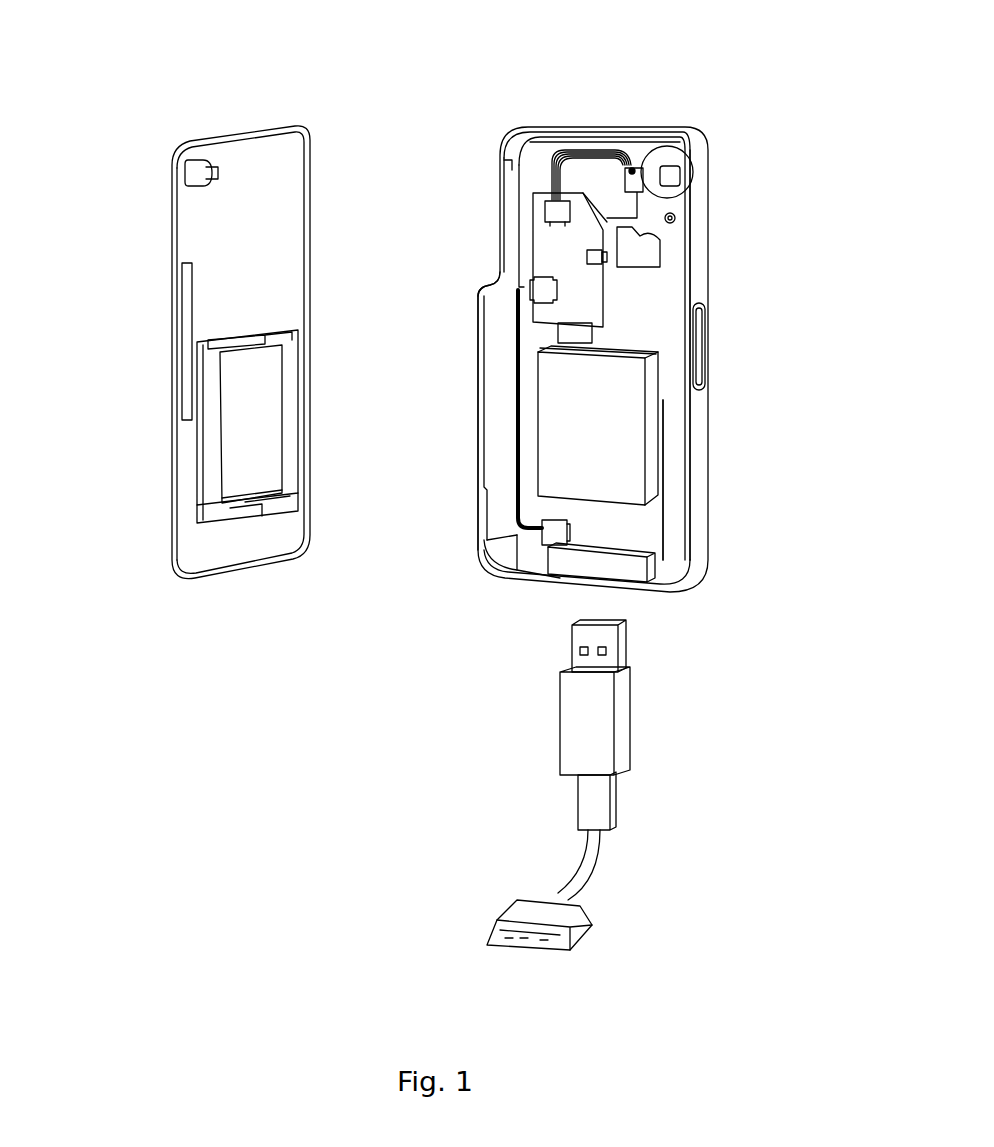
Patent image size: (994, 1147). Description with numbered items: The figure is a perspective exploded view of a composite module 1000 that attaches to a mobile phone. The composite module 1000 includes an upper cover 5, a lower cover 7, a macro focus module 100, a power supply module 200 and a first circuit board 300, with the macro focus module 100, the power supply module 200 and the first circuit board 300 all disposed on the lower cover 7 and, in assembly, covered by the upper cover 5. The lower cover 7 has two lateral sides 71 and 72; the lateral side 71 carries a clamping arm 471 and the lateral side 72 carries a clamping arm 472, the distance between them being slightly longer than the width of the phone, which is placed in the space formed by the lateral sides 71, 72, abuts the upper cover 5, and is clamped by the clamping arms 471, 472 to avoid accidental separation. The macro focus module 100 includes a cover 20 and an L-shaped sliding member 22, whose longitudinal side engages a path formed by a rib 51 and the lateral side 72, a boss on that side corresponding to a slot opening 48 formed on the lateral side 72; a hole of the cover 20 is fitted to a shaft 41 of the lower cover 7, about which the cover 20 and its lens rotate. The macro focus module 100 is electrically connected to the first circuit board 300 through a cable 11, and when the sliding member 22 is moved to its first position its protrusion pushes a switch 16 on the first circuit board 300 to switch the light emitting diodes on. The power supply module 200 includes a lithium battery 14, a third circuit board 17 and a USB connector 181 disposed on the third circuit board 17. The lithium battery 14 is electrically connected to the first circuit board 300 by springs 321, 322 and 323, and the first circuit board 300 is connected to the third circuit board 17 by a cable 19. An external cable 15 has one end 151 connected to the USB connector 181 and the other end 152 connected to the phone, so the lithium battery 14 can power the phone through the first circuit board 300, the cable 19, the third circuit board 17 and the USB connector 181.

The composite module 1000 is at (338, 32).
The upper cover 5 is at (169, 150).
The rib 51 is at (186, 325).
The lower cover 7 is at (672, 134).
The lateral side 71 is at (500, 313).
The lateral side 72 is at (698, 286).
The slot opening 48 is at (700, 346).
The clamping arm 472 is at (662, 406).
The clamping arm 471 is at (483, 459).
The cable 19 is at (518, 508).
The macro focus module 100 is at (793, 178).
The cover 20 is at (690, 216).
The sliding member 22 is at (690, 246).
The shaft 41 is at (632, 165).
The first circuit board 300 is at (580, 220).
The cable 11 is at (590, 150).
The switch 16 is at (590, 256).
The spring 321 is at (520, 330).
The spring 322 is at (560, 337).
The spring 323 is at (590, 331).
The power supply module 200 is at (803, 443).
The lithium battery 14 is at (638, 470).
The third circuit board 17 is at (635, 538).
The USB connector 181 is at (630, 573).
The end 151 is at (600, 690).
The external cable 15 is at (600, 812).
The end 152 is at (577, 929).